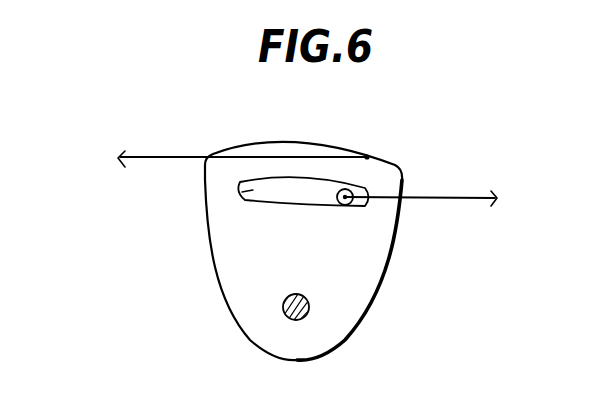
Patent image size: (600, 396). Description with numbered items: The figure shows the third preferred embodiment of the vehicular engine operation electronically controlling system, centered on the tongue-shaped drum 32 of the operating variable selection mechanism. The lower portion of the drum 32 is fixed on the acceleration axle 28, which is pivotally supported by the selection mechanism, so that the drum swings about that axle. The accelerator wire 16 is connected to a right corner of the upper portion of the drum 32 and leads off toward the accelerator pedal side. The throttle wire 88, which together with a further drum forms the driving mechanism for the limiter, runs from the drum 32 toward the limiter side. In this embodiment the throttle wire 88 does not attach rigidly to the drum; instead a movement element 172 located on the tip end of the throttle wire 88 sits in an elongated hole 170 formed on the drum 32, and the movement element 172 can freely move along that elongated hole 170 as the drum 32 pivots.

The accelerator wire 16 is at (176, 156).
The throttle wire 88 is at (441, 196).
The elongated hole 170 is at (244, 197).
The movement element 172 is at (360, 207).
The tongue-shaped drum 32 is at (365, 270).
The acceleration axle 28 is at (283, 310).